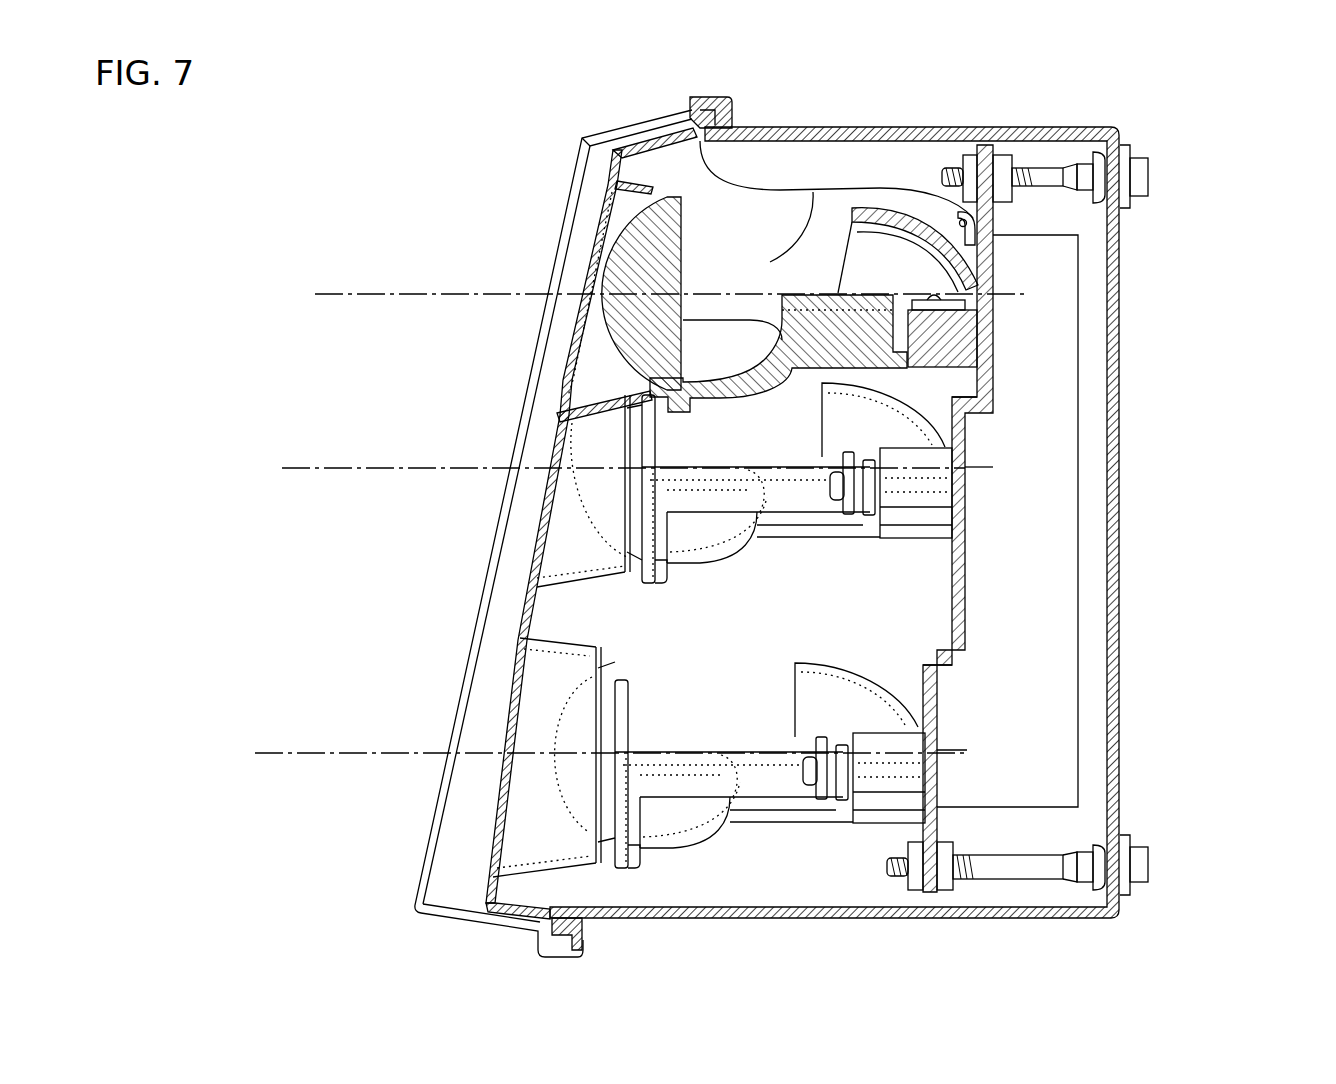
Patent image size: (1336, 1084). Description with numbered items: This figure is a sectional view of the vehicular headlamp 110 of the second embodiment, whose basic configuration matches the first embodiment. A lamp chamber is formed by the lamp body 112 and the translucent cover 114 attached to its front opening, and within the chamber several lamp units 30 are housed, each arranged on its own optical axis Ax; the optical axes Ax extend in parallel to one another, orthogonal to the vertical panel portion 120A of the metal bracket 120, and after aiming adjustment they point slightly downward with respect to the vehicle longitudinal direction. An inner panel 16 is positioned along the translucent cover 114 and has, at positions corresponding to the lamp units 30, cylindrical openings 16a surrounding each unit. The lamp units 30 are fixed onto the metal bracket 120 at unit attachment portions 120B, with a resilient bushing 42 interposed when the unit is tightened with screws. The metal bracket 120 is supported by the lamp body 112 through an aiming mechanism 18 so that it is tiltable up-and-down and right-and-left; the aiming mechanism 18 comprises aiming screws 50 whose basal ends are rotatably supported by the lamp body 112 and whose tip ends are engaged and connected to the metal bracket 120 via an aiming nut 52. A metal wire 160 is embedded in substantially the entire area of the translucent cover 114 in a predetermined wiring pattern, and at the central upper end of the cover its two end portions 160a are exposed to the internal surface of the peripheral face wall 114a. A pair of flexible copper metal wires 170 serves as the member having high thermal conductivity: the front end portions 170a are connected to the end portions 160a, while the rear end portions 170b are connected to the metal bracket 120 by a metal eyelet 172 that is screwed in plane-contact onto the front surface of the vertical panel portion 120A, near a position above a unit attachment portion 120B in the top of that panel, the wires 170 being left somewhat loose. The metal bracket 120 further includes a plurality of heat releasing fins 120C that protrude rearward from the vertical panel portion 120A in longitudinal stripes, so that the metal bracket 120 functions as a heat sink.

The vehicular headlamp 110 is at (372, 152).
The lamp body 112 is at (1124, 270).
The translucent cover 114 is at (456, 621).
The peripheral face wall 114a is at (640, 123).
The inner panel 16 is at (521, 556).
The opening 16a is at (577, 387).
The metal wire 160 is at (450, 672).
The end portion of metal wire 160a is at (633, 152).
The lamp unit 30 is at (605, 218).
The resilient bushing 42 is at (847, 808).
The metal wire 170 is at (831, 272).
The front end portion of metal wire 170a is at (693, 133).
The rear end portion of metal wire 170b is at (935, 210).
The metal eyelet 172 is at (990, 225).
The metal bracket 120 is at (1038, 521).
The vertical panel portion 120A is at (967, 587).
The unit attachment portion 120B is at (972, 412).
The heat releasing fin 120C is at (1047, 548).
The aiming screw 50 is at (1043, 870).
The aiming nut 52 is at (960, 845).
The aiming mechanism 18 is at (1165, 805).
The optical axis Ax is at (355, 318).